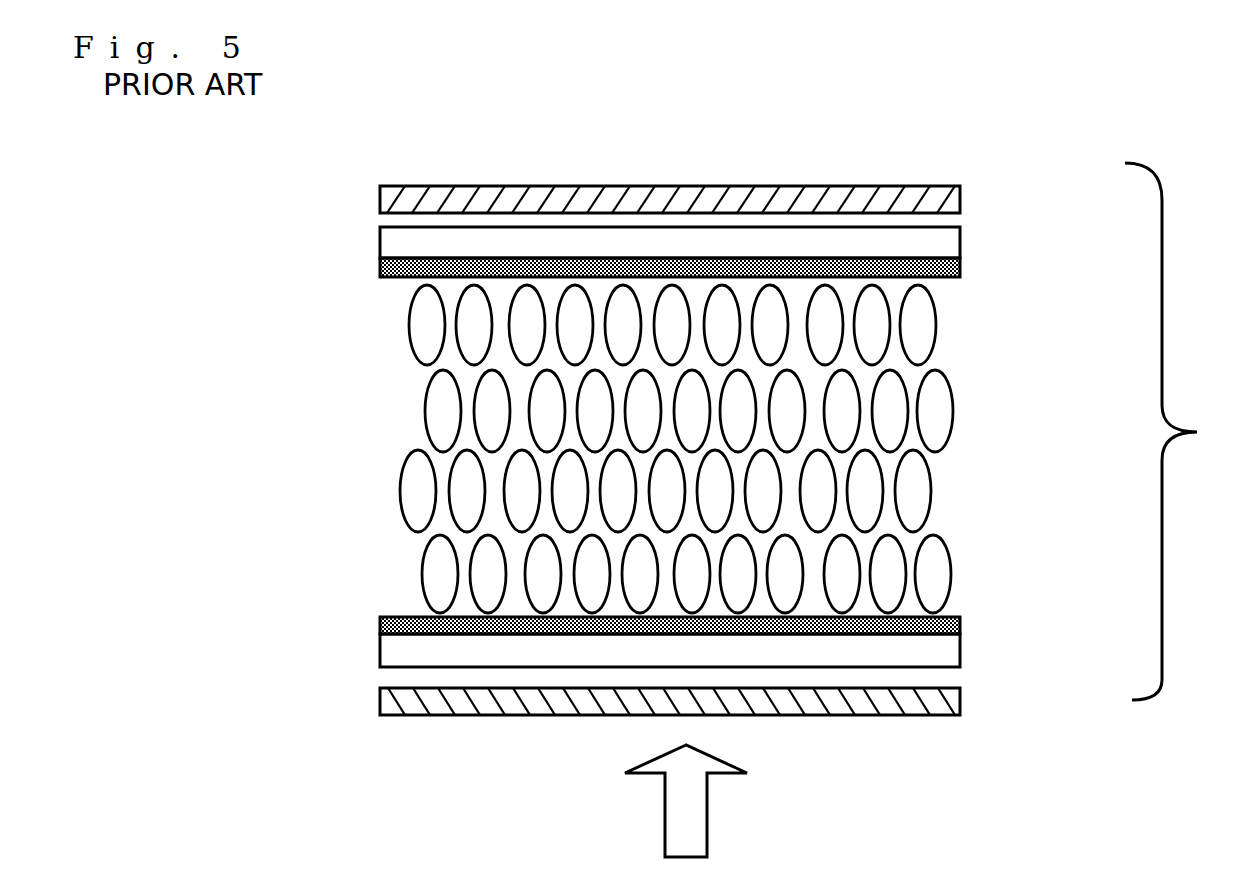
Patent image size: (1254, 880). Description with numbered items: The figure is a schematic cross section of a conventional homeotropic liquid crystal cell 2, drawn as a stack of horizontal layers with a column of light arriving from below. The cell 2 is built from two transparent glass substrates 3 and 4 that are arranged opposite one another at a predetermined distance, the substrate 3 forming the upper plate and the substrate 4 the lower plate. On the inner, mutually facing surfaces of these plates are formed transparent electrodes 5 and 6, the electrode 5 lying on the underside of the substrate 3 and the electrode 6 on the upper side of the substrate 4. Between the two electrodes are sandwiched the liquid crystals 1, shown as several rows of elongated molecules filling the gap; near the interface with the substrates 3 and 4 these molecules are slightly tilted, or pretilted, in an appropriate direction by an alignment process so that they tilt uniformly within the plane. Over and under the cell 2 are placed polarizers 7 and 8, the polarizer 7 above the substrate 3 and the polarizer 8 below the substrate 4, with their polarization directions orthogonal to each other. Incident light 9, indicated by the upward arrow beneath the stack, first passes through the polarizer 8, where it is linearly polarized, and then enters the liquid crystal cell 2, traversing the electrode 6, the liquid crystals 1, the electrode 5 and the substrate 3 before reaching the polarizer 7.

The liquid crystals 1 is at (930, 333).
The liquid crystal cell 2 is at (1175, 431).
The transparent glass substrate 3 is at (930, 252).
The transparent glass substrate 4 is at (943, 657).
The transparent electrode 5 is at (963, 272).
The transparent electrode 6 is at (958, 622).
The polarizer 7 is at (880, 185).
The polarizer 8 is at (953, 703).
The incident light 9 is at (690, 801).